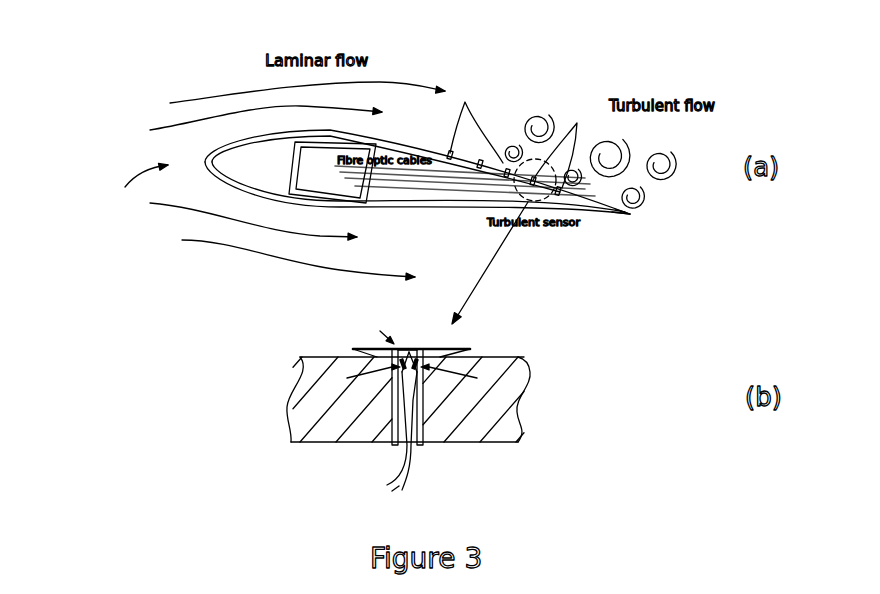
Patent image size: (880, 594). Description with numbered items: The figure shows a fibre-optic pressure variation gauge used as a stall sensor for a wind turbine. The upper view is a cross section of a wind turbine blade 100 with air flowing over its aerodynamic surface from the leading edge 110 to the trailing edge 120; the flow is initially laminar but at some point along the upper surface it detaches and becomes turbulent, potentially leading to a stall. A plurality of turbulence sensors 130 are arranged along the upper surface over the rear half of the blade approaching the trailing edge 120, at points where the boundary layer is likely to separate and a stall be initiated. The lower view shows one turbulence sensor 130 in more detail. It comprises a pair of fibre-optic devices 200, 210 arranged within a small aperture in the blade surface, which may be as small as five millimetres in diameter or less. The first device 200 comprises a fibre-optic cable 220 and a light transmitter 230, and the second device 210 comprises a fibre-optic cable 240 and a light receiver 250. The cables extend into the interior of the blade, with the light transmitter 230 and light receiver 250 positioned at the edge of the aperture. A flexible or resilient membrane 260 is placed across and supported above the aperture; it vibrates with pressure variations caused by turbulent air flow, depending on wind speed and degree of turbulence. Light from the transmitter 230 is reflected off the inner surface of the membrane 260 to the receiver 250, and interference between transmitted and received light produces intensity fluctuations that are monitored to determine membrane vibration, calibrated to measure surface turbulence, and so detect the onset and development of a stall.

The wind turbine blade 100 is at (127, 186).
The leading edge 110 is at (205, 162).
The trailing edge 120 is at (630, 215).
The turbulence sensor 130 is at (465, 102).
The fibre-optic device 200 is at (398, 357).
The fibre-optic device 210 is at (418, 357).
The fibre-optic cable 220 is at (387, 484).
The light transmitter 230 is at (398, 362).
The fibre-optic cable 240 is at (403, 486).
The light receiver 250 is at (425, 366).
The membrane 260 is at (421, 347).